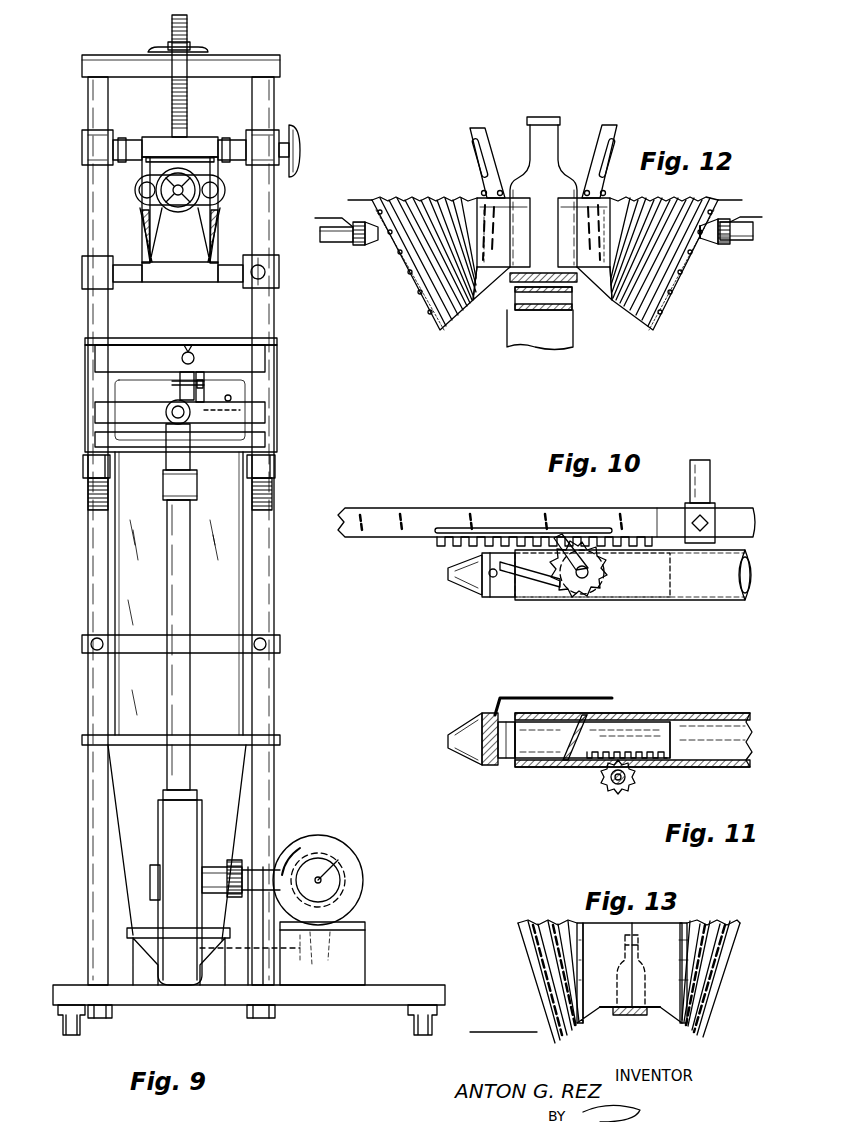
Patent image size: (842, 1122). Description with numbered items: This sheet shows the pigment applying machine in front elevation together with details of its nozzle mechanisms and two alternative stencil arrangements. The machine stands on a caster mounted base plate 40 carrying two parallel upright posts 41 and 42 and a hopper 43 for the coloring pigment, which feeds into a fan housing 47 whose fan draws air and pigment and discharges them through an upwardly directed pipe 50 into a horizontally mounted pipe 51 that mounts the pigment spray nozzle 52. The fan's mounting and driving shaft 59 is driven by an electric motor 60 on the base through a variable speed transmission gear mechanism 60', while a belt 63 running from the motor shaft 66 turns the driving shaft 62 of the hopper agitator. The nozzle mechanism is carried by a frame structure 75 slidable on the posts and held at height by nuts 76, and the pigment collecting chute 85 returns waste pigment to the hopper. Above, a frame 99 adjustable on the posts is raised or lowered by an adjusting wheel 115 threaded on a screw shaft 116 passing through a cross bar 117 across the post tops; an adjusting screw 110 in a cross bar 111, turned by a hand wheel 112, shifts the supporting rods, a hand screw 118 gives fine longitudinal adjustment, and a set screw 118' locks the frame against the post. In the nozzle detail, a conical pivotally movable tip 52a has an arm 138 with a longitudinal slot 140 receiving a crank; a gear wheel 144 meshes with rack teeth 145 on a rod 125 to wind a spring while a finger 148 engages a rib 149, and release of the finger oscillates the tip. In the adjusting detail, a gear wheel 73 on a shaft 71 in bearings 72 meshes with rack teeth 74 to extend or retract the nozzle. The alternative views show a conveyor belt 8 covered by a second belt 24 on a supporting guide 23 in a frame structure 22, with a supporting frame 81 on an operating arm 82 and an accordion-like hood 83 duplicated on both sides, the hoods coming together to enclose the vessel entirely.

In FIG. 9, the adjusting wheel 115 is at (150, 48).
In FIG. 9, the screw shaft 116 is at (188, 44).
In FIG. 9, the cross bar 117 is at (222, 62).
In FIG. 9, the hand screw 118 is at (262, 136).
In FIG. 9, the set screw 118' is at (285, 271).
In FIG. 9, the frame 99 is at (240, 206).
In FIG. 9, the adjusting screw 110 is at (186, 200).
In FIG. 9, the cross bar 111 is at (214, 196).
In FIG. 9, the hand wheel 112 is at (160, 204).
In FIG. 9, the frame structure 75 is at (144, 340).
In FIG. 9, the nuts 76 is at (82, 466).
In FIG. 9, the horizontally mounted pipe 51 is at (168, 452).
In FIG. 10, the horizontally mounted pipe 51 is at (718, 585).
In FIG. 11, the horizontally mounted pipe 51 is at (700, 716).
In FIG. 9, the pigment collecting chute 85 is at (232, 540).
In FIG. 9, the upwardly directed pipe 50 is at (190, 584).
In FIG. 9, the upright post 41 is at (92, 690).
In FIG. 9, the upright post 42 is at (270, 690).
In FIG. 9, the hopper 43 is at (120, 794).
In FIG. 9, the fan housing 47 is at (200, 854).
In FIG. 9, the mounting and driving shaft 59 is at (258, 806).
In FIG. 9, the variable speed transmission gear mechanism 60' is at (275, 854).
In FIG. 9, the motor shaft 66 is at (322, 878).
In FIG. 9, the electric motor 60 is at (336, 900).
In FIG. 9, the belt 63 is at (366, 912).
In FIG. 9, the base plate 40 is at (392, 985).
In FIG. 9, the driving shaft 62 is at (222, 965).
In FIG. 12, the operating arm 82 is at (605, 132).
In FIG. 12, the supporting frame 81 is at (606, 275).
In FIG. 13, the supporting frame 81 is at (670, 932).
In FIG. 12, the hood 83 is at (638, 310).
In FIG. 13, the hood 83 is at (710, 1002).
In FIG. 12, the conveyor belt 8 is at (510, 282).
In FIG. 13, the conveyor belt 8 is at (632, 1015).
In FIG. 12, the supporting guide 23 is at (545, 306).
In FIG. 12, the frame structure 22 is at (528, 340).
In FIG. 12, the pigment spray nozzle 52 is at (752, 238).
In FIG. 10, the pigment spray nozzle 52 is at (503, 598).
In FIG. 11, the pigment spray nozzle 52 is at (507, 760).
In FIG. 12, the conical pivotally movable tip 52a is at (720, 242).
In FIG. 10, the conical pivotally movable tip 52a is at (455, 578).
In FIG. 11, the conical pivotally movable tip 52a is at (468, 728).
In FIG. 10, the rod 125 is at (380, 510).
In FIG. 10, the rib 149 is at (484, 526).
In FIG. 10, the finger 148 is at (580, 550).
In FIG. 10, the rack teeth 145 is at (440, 545).
In FIG. 10, the gear wheel 144 is at (612, 568).
In FIG. 10, the longitudinal slot 140 is at (560, 588).
In FIG. 10, the arm 138 is at (532, 590).
In FIG. 11, the arm 138 is at (578, 690).
In FIG. 11, the rack teeth 74 is at (660, 765).
In FIG. 11, the gear wheel 73 is at (600, 780).
In FIG. 11, the bearings 72 is at (606, 797).
In FIG. 11, the shaft 71 is at (619, 786).
In FIG. 13, the second belt 24 is at (612, 1012).